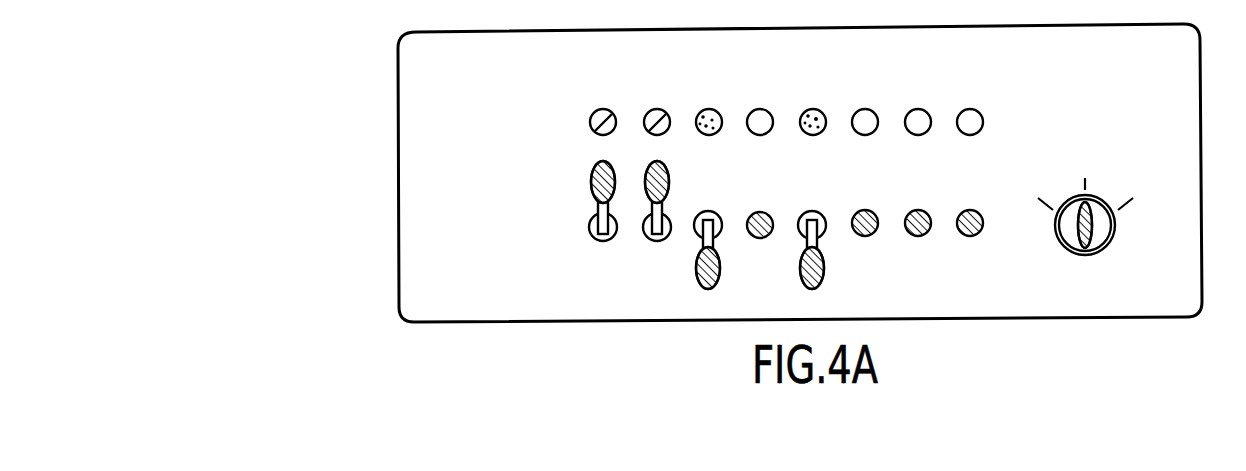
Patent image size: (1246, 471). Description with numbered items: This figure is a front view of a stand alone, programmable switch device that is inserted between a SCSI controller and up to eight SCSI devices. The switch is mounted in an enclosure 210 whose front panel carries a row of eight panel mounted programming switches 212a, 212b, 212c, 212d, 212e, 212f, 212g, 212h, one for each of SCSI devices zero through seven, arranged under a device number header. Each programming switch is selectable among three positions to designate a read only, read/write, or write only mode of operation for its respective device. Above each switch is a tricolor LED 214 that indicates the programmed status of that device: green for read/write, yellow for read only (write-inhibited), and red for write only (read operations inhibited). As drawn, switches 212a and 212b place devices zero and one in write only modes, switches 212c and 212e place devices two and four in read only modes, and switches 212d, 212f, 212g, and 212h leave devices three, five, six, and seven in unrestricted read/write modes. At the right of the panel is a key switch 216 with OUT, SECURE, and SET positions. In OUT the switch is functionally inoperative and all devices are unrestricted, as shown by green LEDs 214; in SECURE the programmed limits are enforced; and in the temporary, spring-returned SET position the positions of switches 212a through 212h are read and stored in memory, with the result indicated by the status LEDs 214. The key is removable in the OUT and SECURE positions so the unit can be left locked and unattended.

The enclosure 210 is at (410, 243).
The tricolor LED 214 is at (590, 116).
The programming switch 212a is at (592, 239).
The programming switch 212b is at (659, 242).
The programming switch 212c is at (695, 234).
The programming switch 212d is at (766, 212).
The programming switch 212e is at (827, 222).
The programming switch 212f is at (867, 237).
The programming switch 212g is at (927, 236).
The programming switch 212h is at (978, 214).
The key switch 216 is at (1110, 243).